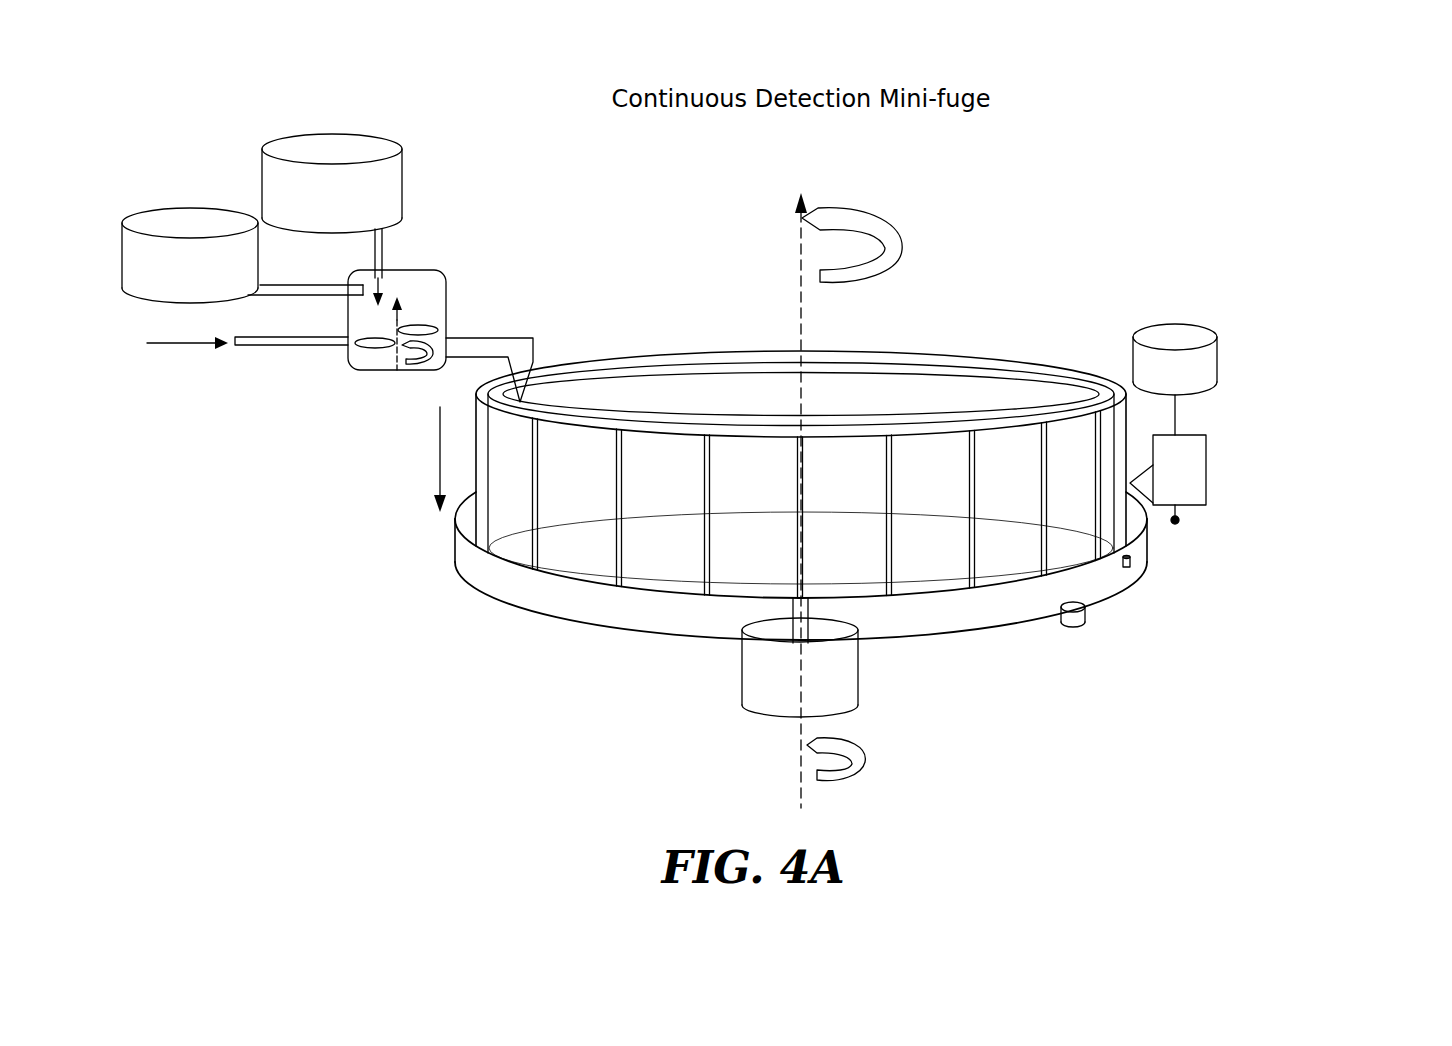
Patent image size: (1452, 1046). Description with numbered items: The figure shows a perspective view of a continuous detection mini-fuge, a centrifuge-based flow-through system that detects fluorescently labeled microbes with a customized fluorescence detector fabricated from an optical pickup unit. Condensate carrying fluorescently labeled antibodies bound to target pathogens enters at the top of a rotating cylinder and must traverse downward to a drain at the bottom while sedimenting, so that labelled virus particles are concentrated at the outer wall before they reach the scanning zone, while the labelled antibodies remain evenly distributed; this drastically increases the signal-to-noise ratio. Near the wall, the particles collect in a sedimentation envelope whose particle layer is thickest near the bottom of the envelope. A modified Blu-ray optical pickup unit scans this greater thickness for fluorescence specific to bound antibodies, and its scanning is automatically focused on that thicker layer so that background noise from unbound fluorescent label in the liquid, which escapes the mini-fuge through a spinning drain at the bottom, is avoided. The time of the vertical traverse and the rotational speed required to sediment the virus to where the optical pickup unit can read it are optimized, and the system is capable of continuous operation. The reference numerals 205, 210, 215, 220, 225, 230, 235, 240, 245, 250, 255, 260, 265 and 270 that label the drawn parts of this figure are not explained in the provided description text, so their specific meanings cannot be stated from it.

The labels reservoir 205 is at (313, 153).
The decon fluid reservoir 210 is at (167, 227).
The clean concentrated condensate inlet 215 is at (207, 392).
The mixer 220 is at (418, 301).
The fluid containment lip 225 is at (632, 366).
The flow direction 230 is at (385, 459).
The glass cylinder with closed bottom 235 is at (1034, 366).
The OPU autofocus fiduciary stripes 240 is at (611, 512).
The waste tray 245 is at (660, 610).
The spindle motor 250 is at (866, 690).
The spinning drain orifice 255 is at (1132, 572).
The static drain orifice 260 is at (1077, 634).
The drive for linear scanning 265 is at (1222, 357).
The Blu-Ray OPU scanner with autofocus 270 is at (1214, 466).